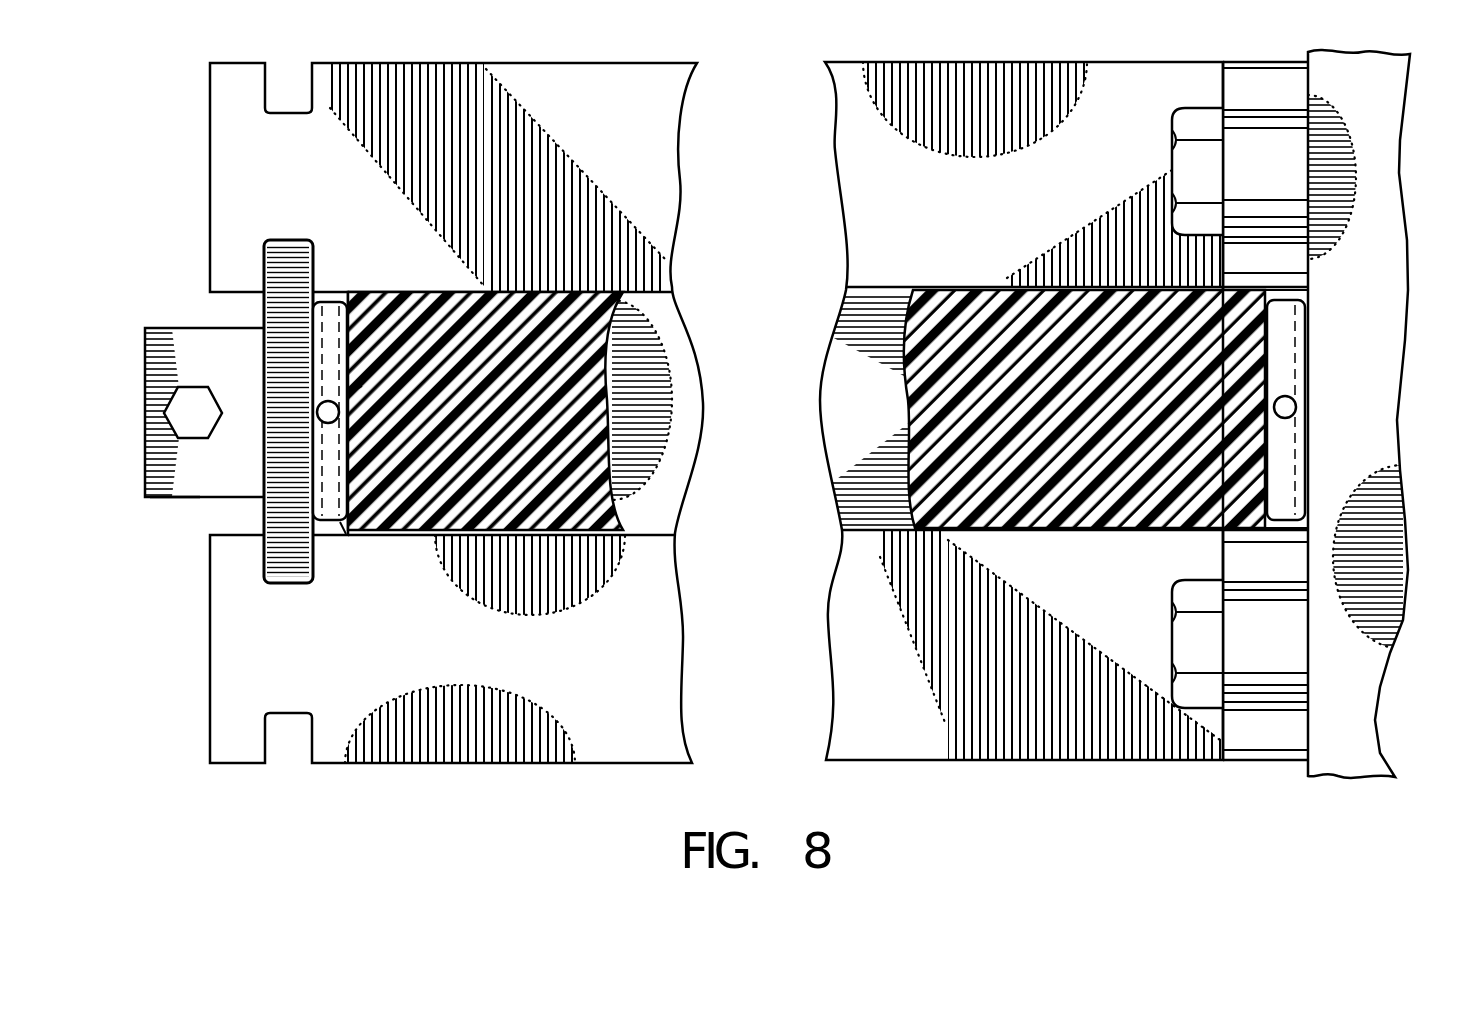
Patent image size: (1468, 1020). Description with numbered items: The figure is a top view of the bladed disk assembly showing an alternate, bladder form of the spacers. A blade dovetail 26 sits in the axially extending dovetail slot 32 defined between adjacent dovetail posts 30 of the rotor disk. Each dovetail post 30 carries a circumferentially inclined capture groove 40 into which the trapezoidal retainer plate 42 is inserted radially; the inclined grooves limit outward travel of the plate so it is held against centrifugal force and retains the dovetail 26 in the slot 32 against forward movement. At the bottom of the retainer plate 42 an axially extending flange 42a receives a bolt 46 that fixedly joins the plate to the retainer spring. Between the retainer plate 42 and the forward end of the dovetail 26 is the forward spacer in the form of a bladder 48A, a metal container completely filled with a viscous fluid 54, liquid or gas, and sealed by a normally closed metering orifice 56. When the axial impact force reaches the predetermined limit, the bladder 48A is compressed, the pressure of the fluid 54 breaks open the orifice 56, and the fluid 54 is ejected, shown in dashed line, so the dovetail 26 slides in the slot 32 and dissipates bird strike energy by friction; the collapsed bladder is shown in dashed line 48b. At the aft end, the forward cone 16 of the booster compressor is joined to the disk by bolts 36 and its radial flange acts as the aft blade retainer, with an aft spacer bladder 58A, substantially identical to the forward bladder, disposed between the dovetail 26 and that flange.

The forward cone 16 is at (1358, 753).
The blade dovetail 26 is at (450, 292).
The dovetail post 30 is at (212, 162).
The dovetail slot 32 is at (667, 515).
The bolt 36 is at (1186, 157).
The capture groove 40 is at (268, 88).
The retainer plate 42 is at (268, 468).
The axially extending flange 42a is at (188, 498).
The bolt 46 is at (192, 397).
The bladder 48A is at (334, 300).
The compressed bladder 48b is at (343, 537).
The viscous fluid 54 is at (352, 392).
The metering orifice 56 is at (339, 416).
The aft spacer bladder 58A is at (1275, 437).